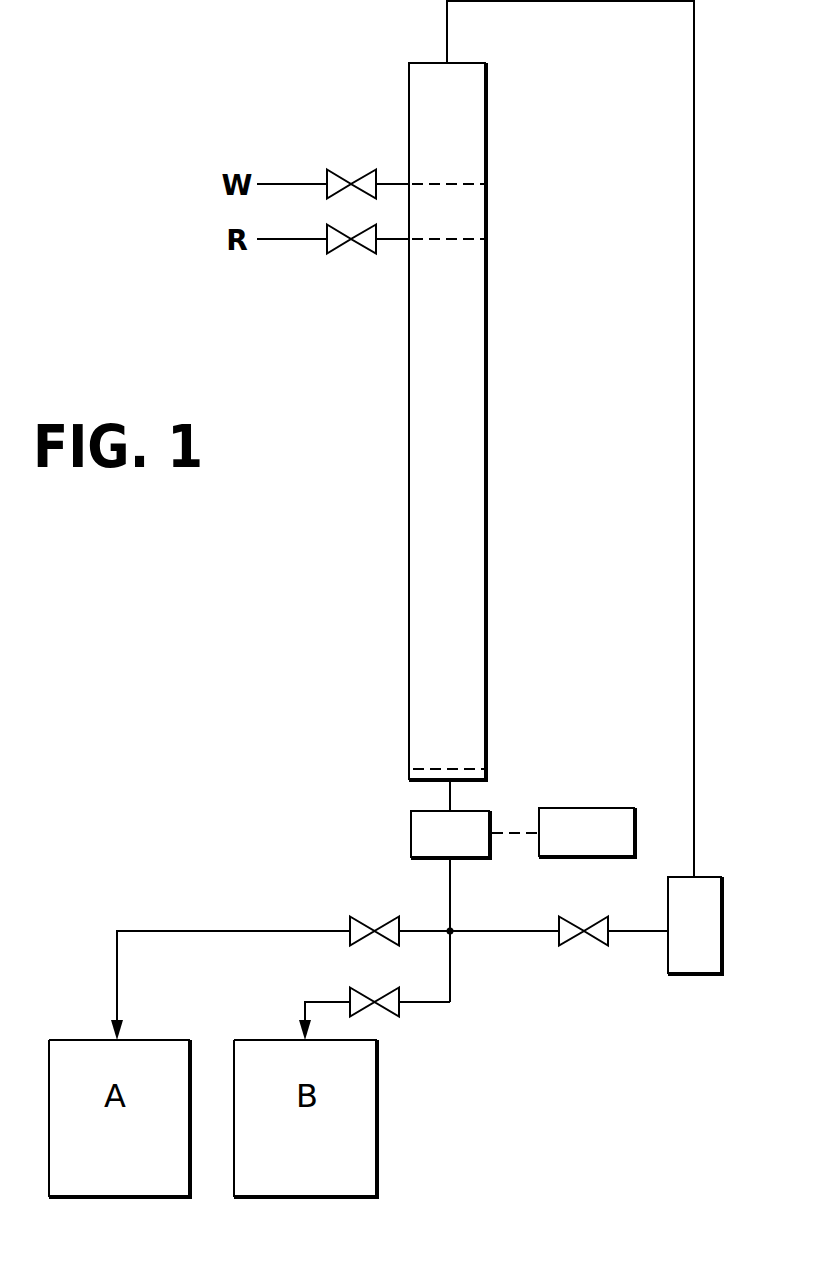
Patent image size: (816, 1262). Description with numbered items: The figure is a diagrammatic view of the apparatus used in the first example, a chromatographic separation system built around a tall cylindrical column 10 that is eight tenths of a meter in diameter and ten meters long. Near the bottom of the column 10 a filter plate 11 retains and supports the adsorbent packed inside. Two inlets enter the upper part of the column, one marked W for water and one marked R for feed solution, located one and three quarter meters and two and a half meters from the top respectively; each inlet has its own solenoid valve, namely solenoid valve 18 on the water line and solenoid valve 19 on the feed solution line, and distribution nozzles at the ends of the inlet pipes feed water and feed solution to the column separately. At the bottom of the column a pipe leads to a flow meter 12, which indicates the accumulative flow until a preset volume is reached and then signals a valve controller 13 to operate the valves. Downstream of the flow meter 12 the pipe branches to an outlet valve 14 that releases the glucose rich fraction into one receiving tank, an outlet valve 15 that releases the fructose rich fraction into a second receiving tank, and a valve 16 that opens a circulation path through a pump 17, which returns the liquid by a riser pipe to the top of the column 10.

The cylindrical column 10 is at (447, 421).
The filter plate 11 is at (456, 760).
The flow meter 12 is at (410, 833).
The valve controller 13 is at (600, 808).
The outlet valve 14 is at (370, 917).
The outlet valve 15 is at (388, 1017).
The valve 16 is at (578, 940).
The pump 17 is at (722, 927).
The solenoid valve 18 is at (366, 172).
The solenoid valve 19 is at (345, 246).